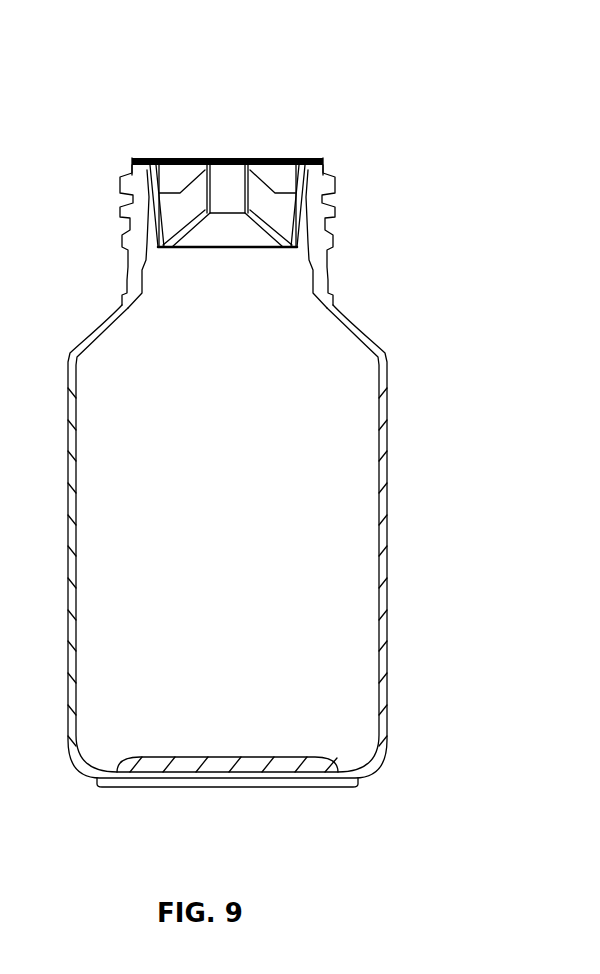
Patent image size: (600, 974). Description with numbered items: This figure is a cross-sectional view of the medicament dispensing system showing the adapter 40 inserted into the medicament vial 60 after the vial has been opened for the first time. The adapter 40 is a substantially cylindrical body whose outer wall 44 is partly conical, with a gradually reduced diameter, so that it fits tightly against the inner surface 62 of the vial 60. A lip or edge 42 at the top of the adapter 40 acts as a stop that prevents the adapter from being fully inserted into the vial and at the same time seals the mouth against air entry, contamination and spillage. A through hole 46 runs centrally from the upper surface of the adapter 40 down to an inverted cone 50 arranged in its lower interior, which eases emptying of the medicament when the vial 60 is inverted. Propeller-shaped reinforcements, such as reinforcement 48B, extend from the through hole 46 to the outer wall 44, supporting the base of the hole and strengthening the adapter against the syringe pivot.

The adapter 40 is at (276, 156).
The lip or edge 42 is at (143, 158).
The outer wall 44 is at (157, 201).
The through hole 46 is at (226, 184).
The propeller shaped reinforcement 48B is at (265, 195).
The inverted cone 50 is at (229, 243).
The medicament vial 60 is at (393, 568).
The inner surface 62 is at (325, 213).